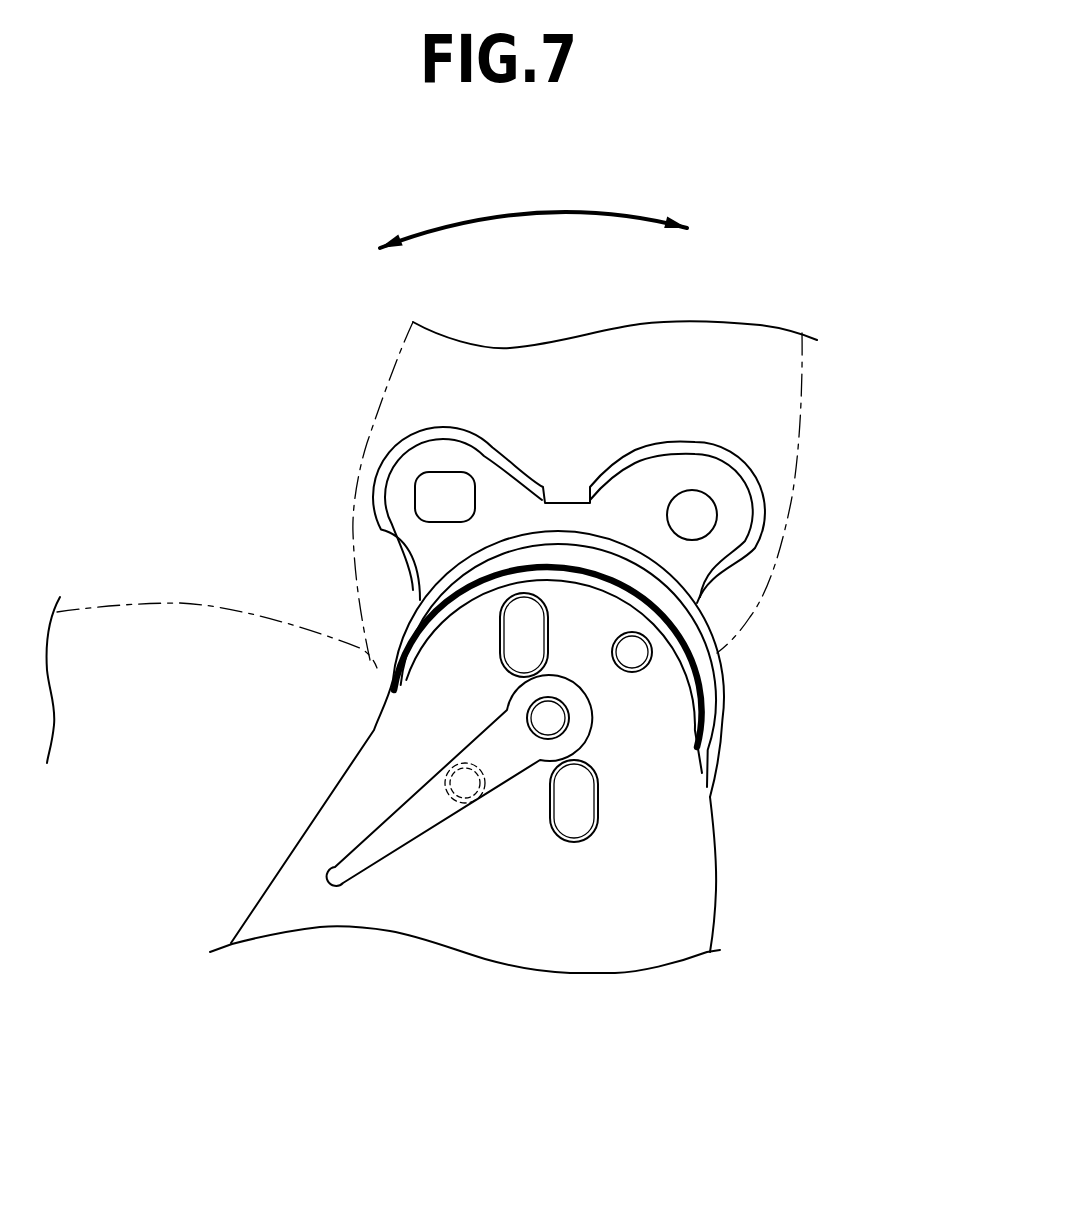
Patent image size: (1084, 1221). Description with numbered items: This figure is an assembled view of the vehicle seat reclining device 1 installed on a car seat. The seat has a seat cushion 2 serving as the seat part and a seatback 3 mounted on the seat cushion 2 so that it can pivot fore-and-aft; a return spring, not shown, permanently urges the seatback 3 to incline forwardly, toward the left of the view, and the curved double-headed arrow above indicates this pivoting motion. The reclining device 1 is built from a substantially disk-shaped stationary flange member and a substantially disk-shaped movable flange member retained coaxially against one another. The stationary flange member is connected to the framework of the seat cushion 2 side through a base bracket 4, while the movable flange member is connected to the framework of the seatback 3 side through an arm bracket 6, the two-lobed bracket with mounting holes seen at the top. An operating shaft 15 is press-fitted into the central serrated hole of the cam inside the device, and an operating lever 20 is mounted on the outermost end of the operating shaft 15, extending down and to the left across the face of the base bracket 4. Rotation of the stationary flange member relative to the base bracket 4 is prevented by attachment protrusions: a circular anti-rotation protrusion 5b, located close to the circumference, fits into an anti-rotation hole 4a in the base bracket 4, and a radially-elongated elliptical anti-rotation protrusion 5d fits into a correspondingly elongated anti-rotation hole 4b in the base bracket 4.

The vehicle seat reclining device 1 is at (720, 660).
The seat cushion 2 is at (178, 603).
The seatback 3 is at (803, 400).
The base bracket 4 is at (680, 813).
The anti-rotation hole 4a is at (652, 660).
The anti-rotation hole 4b is at (562, 797).
The anti-rotation protrusion 5b is at (626, 653).
The anti-rotation protrusion 5d is at (573, 820).
The arm bracket 6 is at (643, 505).
The operating shaft 15 is at (548, 724).
The operating lever 20 is at (385, 852).